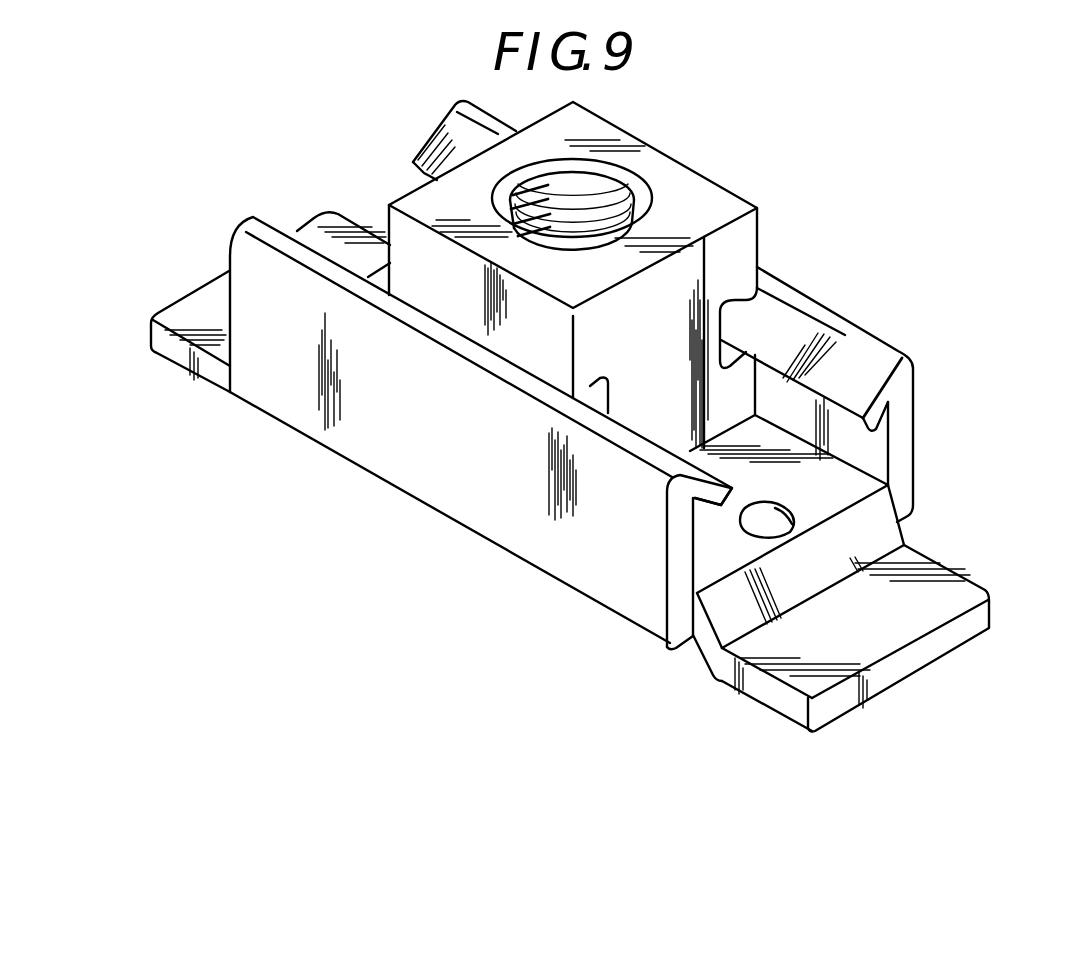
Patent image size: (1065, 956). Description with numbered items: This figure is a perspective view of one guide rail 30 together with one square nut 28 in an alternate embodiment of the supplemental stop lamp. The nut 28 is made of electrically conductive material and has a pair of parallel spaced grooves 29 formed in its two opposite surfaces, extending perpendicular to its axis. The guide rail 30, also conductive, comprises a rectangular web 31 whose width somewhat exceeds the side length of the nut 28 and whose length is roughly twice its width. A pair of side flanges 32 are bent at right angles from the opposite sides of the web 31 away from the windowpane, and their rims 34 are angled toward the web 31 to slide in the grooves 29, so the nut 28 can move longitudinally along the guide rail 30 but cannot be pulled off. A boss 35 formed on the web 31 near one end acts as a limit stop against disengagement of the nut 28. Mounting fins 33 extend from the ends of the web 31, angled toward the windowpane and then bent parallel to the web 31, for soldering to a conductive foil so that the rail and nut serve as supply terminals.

The square nut 28 is at (698, 186).
The grooves 29 is at (748, 303).
The guide rail 30 is at (983, 388).
The web 31 is at (843, 487).
The side flanges 32 is at (907, 461).
The mounting fins 33 is at (196, 297).
The rims 34 is at (888, 431).
The boss 35 is at (788, 532).